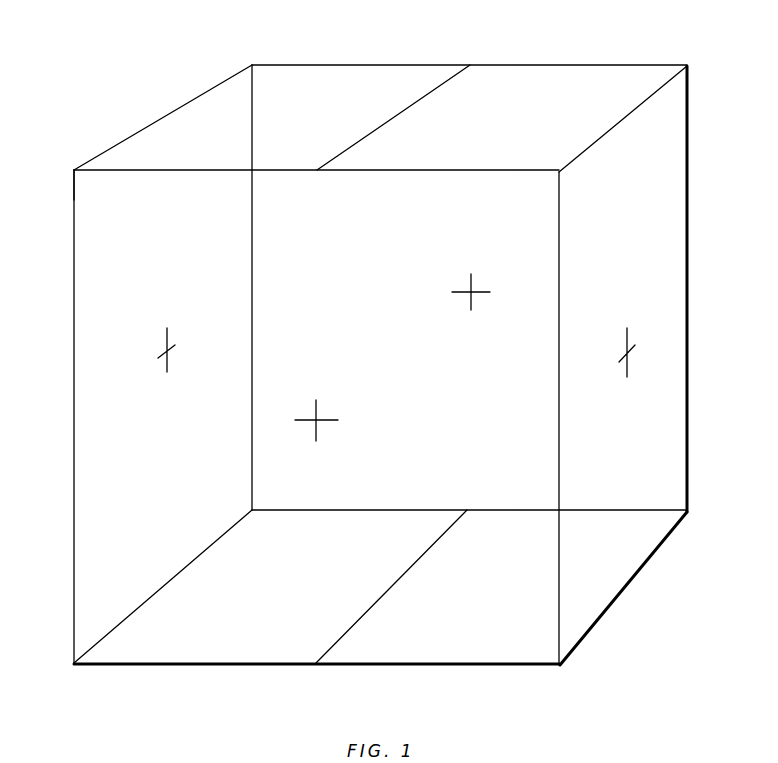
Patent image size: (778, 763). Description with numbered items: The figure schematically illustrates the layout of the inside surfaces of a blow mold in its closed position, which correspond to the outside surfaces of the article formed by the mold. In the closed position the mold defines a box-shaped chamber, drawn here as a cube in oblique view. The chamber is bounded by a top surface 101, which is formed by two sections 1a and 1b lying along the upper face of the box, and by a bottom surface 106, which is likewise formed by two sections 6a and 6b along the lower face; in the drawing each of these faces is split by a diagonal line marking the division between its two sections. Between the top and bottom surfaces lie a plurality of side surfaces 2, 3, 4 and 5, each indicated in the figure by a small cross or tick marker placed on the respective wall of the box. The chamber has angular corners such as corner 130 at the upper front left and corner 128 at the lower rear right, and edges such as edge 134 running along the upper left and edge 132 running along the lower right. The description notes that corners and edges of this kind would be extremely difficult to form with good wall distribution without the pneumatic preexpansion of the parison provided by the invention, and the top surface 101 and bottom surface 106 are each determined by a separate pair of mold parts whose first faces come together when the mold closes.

The top surface 101 is at (335, 75).
The edge 134 is at (178, 108).
The angular corner 130 is at (73, 168).
The section of top surface 1a is at (417, 75).
The section of top surface 1b is at (580, 75).
The angular corner 128 is at (690, 515).
The edge 132 is at (617, 603).
The section of bottom surface 6a is at (293, 660).
The bottom surface 106 is at (380, 660).
The section of bottom surface 6b is at (507, 660).
The side surface 2 is at (482, 291).
The side surface 3 is at (627, 340).
The side surface 4 is at (166, 366).
The side surface 5 is at (314, 434).